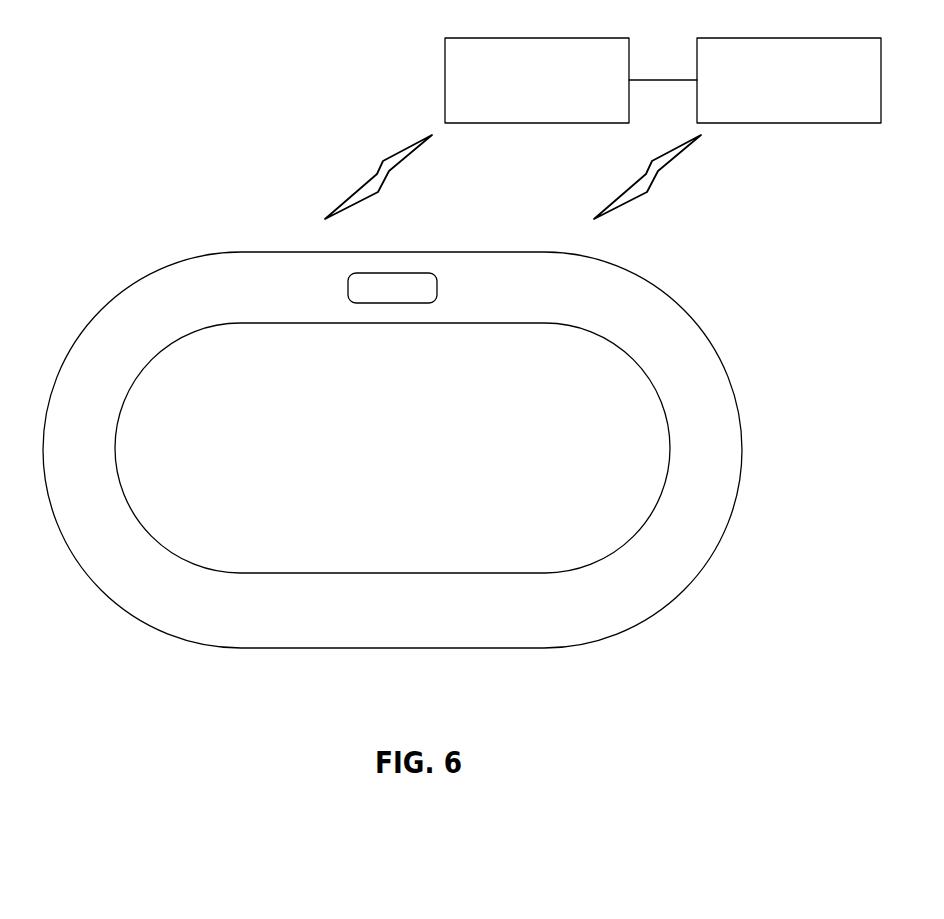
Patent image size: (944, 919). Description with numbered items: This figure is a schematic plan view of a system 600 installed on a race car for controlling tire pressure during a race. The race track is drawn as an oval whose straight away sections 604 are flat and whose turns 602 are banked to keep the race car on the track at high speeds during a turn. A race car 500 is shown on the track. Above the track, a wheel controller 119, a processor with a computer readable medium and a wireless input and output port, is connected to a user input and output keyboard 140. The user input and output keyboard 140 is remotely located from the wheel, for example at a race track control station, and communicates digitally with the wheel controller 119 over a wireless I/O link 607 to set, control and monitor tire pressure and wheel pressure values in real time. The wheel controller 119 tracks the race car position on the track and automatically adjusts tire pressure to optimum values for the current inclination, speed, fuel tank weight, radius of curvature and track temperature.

The wheel assembly / device 600 is at (441, 434).
The race track turns 602 is at (708, 413).
The racetrack straight away sections 604 is at (363, 622).
The sensor module 500 is at (413, 287).
The wireless I/O link 607 is at (408, 148).
The wheel controller 119 is at (510, 37).
The user input and output keyboard 140 is at (760, 37).